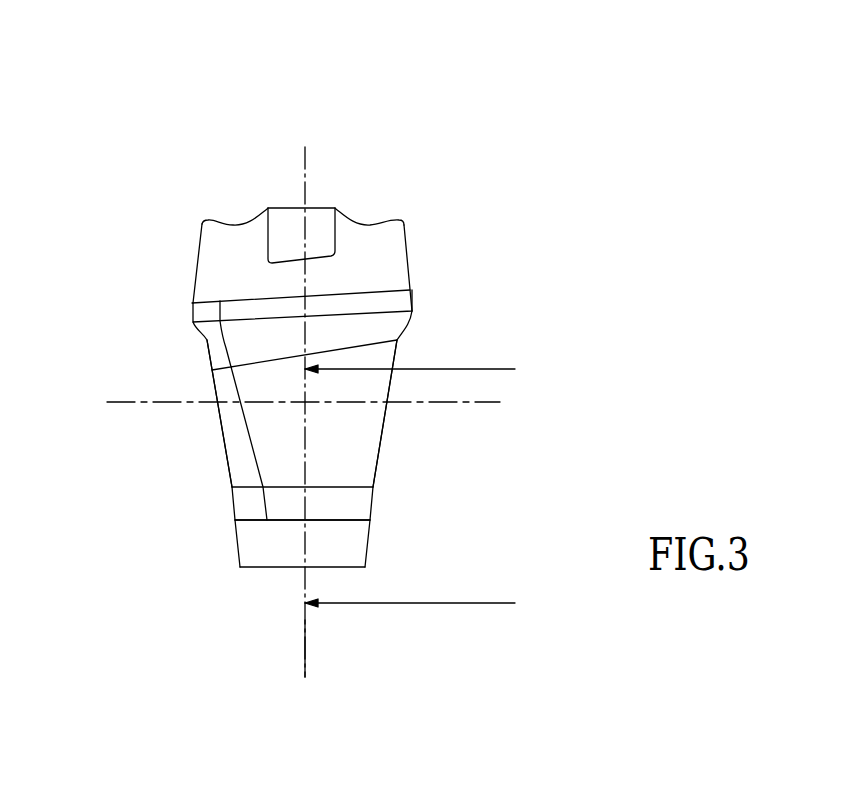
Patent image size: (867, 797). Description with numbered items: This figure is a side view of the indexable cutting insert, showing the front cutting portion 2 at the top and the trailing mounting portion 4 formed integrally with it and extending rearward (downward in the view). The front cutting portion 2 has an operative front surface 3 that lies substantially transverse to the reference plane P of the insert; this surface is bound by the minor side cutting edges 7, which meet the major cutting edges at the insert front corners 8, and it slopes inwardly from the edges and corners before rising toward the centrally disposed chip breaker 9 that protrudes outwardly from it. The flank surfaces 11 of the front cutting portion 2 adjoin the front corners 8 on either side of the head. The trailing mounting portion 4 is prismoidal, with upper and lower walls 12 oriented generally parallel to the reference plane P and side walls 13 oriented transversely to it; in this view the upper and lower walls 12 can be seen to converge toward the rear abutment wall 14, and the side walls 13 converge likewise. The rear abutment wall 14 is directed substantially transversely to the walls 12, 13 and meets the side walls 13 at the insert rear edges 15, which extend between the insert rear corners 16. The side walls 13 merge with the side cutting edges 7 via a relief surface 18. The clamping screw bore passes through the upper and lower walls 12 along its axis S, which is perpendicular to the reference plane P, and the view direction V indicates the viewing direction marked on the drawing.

The front cutting portion 2 is at (296, 328).
The operative front surface 3 is at (380, 247).
The trailing mounting portion 4 is at (236, 575).
The minor side cutting edges 7 is at (363, 293).
The insert front corners 8 is at (193, 305).
The chip breaker 9 is at (285, 222).
The head side flanks 11 is at (193, 272).
The upper and lower walls 12 is at (215, 428).
The side walls 13 is at (358, 469).
The rear abutment wall 14 is at (340, 545).
The insert rear edges 15 is at (285, 522).
The insert rear corners 16 is at (233, 520).
The relief surface 18 is at (190, 320).
The axis of the clamping screw bore S is at (135, 401).
The reference plane P is at (305, 642).
The viewing direction V is at (530, 354).